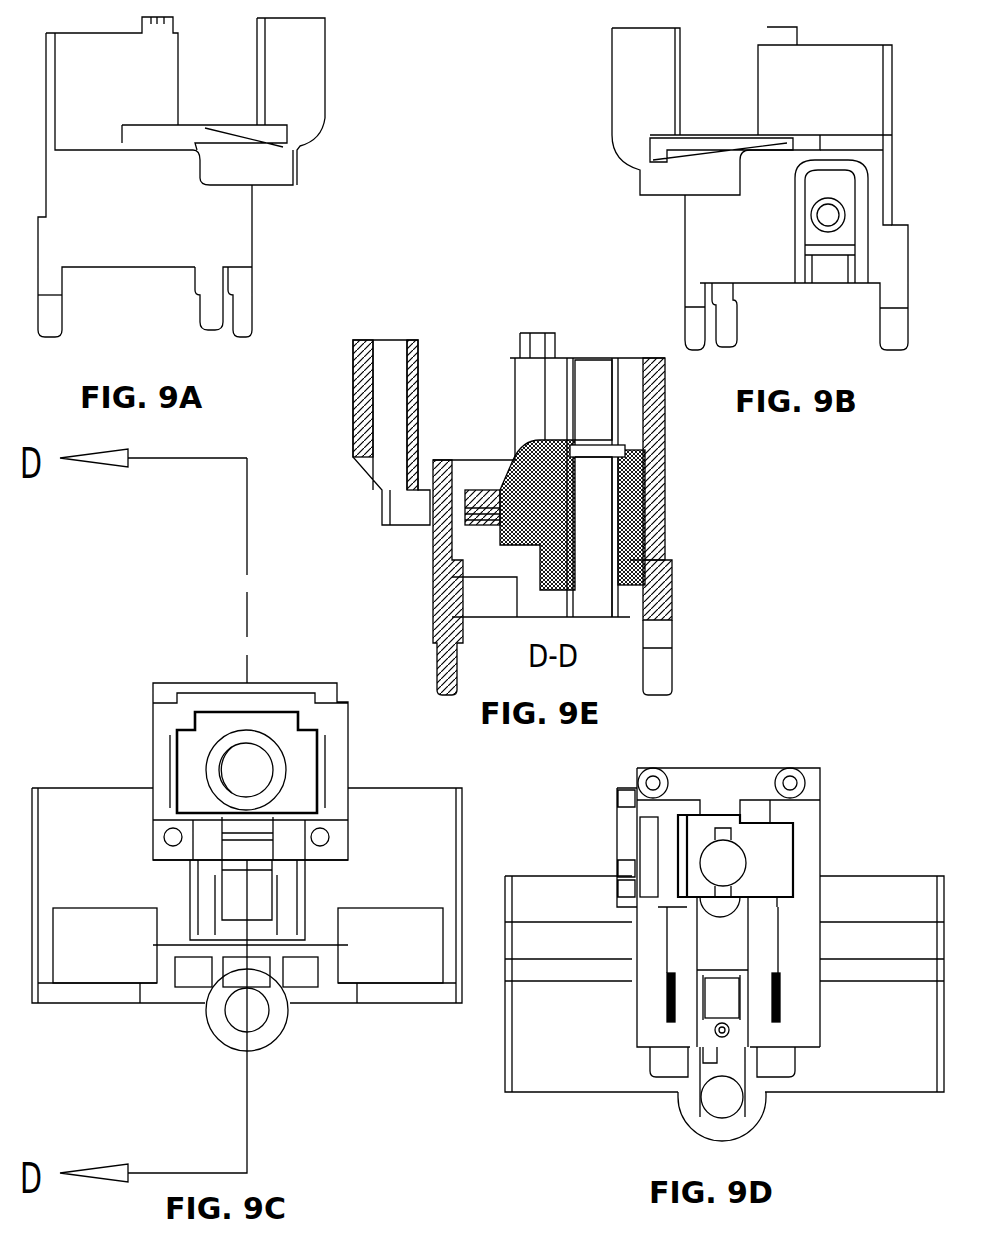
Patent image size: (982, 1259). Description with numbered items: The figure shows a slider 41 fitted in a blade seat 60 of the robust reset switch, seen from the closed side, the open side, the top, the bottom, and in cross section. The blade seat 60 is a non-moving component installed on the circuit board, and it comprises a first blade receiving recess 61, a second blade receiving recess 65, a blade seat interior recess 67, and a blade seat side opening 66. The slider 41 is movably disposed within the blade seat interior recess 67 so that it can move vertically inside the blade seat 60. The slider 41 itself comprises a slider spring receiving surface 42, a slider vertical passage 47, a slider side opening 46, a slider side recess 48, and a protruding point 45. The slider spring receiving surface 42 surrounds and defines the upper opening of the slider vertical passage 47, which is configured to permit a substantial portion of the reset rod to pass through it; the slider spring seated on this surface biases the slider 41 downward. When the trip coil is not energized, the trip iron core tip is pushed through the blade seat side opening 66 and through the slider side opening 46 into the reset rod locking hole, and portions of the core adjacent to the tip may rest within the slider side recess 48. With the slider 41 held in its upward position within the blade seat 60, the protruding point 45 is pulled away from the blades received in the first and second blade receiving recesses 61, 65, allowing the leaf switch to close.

In FIG. 9A, the slider 41 is at (183, 115).
In FIG. 9B, the slider 41 is at (758, 128).
In FIG. 9E, the slider 41 is at (520, 490).
In FIG. 9C, the slider 41 is at (280, 730).
In FIG. 9D, the slider 41 is at (774, 876).
In FIG. 9E, the slider spring receiving surface 42 is at (593, 458).
In FIG. 9C, the slider spring receiving surface 42 is at (280, 785).
In FIG. 9E, the protruding point 45 is at (467, 518).
In FIG. 9D, the protruding point 45 is at (721, 994).
In FIG. 9B, the slider side opening 46 is at (813, 212).
In FIG. 9E, the slider vertical passage 47 is at (604, 519).
In FIG. 9C, the slider vertical passage 47 is at (257, 772).
In FIG. 9D, the slider vertical passage 47 is at (722, 876).
In FIG. 9B, the slider side recess 48 is at (842, 233).
In FIG. 9A, the blade seat 60 is at (150, 202).
In FIG. 9B, the blade seat 60 is at (815, 95).
In FIG. 9C, the blade seat 60 is at (115, 870).
In FIG. 9C, the first blade receiving recess 61 is at (192, 912).
In FIG. 9D, the first blade receiving recess 61 is at (779, 1000).
In FIG. 9C, the second blade receiving recess 65 is at (305, 907).
In FIG. 9D, the second blade receiving recess 65 is at (666, 998).
In FIG. 9B, the blade seat side opening 66 is at (800, 250).
In FIG. 9E, the blade seat interior recess 67 is at (604, 421).